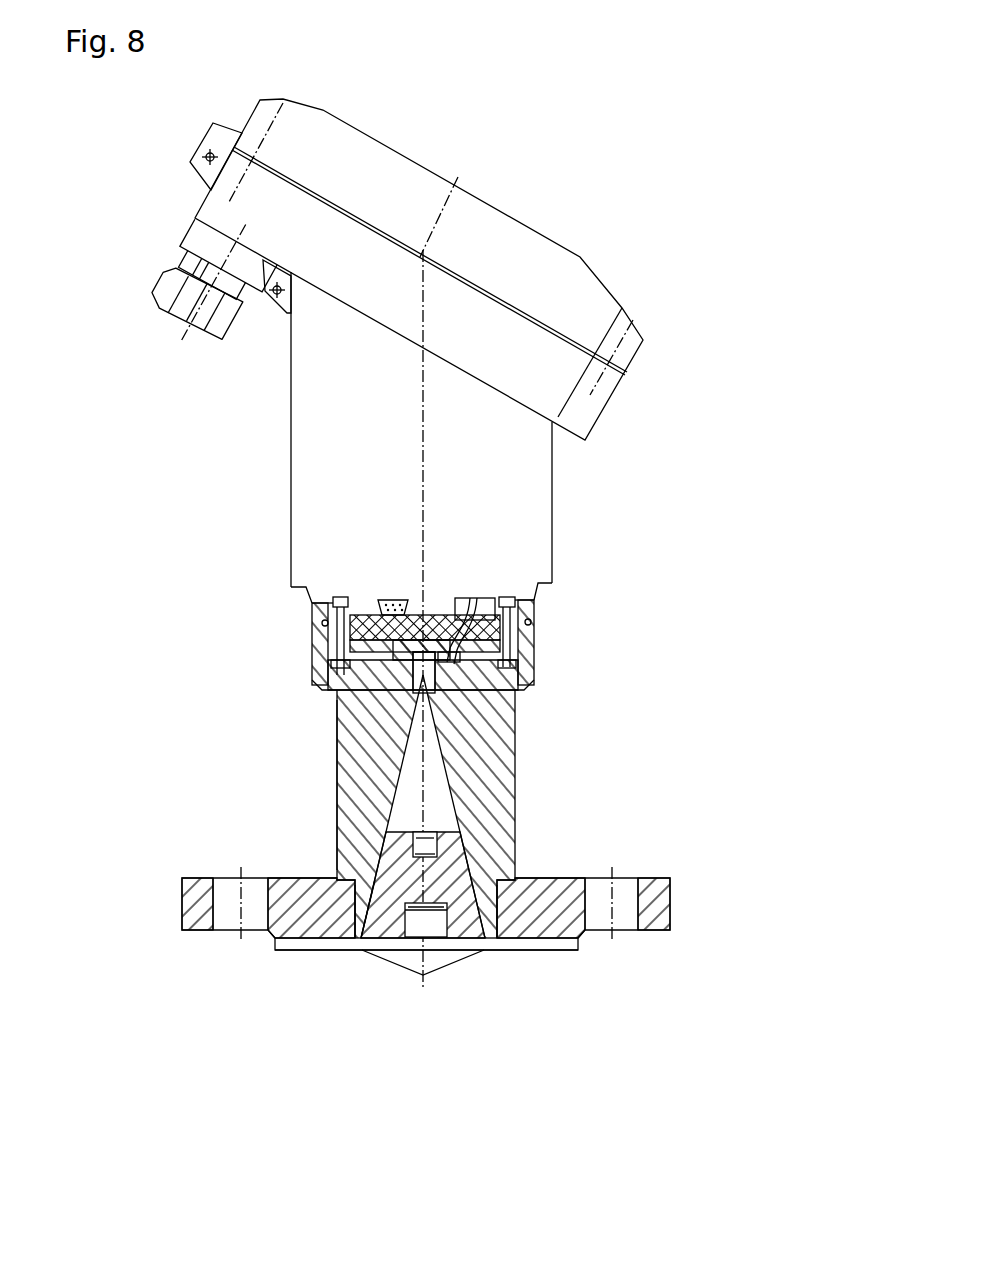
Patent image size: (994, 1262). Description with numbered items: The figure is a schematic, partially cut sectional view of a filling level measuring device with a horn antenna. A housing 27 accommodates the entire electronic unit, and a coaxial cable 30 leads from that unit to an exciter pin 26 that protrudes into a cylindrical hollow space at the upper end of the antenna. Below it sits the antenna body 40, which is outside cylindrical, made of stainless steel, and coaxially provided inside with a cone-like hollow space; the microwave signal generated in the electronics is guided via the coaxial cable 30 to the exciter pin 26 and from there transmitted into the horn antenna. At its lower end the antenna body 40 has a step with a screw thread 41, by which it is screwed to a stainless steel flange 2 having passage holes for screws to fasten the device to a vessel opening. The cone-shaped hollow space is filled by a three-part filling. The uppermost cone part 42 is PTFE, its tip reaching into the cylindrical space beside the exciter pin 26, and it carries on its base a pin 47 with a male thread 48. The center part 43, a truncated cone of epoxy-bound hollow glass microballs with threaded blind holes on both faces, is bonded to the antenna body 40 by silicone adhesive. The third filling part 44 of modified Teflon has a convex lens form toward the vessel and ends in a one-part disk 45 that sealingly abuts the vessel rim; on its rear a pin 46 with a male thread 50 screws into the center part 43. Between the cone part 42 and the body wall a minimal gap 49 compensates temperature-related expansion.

The flange 2 is at (655, 890).
The exciter pin 26 is at (518, 716).
The housing 27 is at (280, 531).
The coaxial cable 30 is at (548, 608).
The antenna body 40 is at (477, 768).
The screw thread 41 is at (356, 913).
The cone part of filling 42 is at (403, 807).
The center part of filling 43 is at (386, 918).
The third filling part 44 is at (433, 963).
The disk 45 is at (530, 943).
The pin 46 is at (420, 918).
The pin 47 is at (440, 835).
The male thread 48 is at (437, 845).
The gap 49 is at (395, 760).
The male thread 50 is at (498, 950).